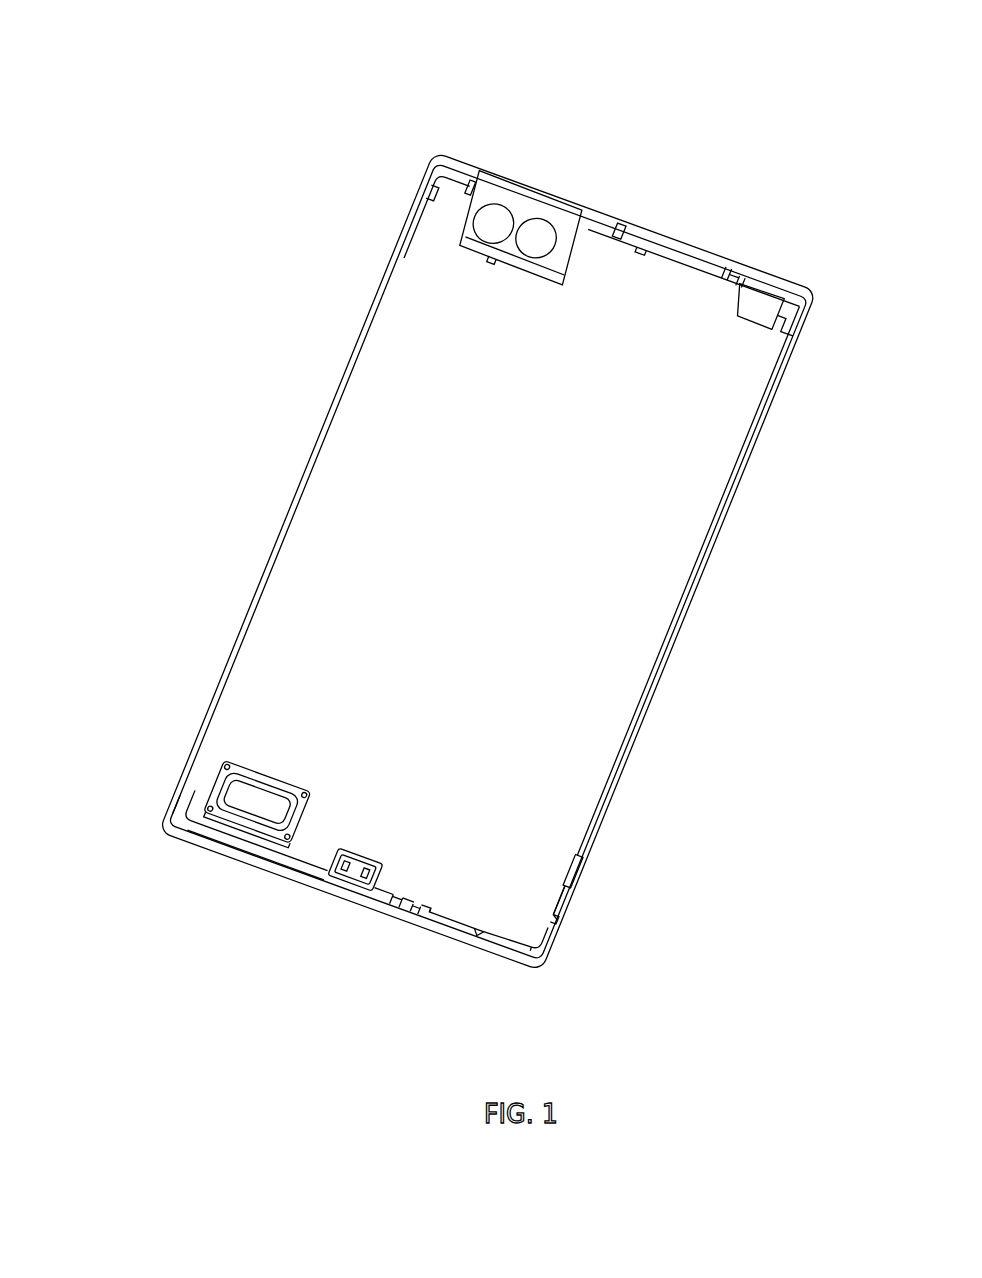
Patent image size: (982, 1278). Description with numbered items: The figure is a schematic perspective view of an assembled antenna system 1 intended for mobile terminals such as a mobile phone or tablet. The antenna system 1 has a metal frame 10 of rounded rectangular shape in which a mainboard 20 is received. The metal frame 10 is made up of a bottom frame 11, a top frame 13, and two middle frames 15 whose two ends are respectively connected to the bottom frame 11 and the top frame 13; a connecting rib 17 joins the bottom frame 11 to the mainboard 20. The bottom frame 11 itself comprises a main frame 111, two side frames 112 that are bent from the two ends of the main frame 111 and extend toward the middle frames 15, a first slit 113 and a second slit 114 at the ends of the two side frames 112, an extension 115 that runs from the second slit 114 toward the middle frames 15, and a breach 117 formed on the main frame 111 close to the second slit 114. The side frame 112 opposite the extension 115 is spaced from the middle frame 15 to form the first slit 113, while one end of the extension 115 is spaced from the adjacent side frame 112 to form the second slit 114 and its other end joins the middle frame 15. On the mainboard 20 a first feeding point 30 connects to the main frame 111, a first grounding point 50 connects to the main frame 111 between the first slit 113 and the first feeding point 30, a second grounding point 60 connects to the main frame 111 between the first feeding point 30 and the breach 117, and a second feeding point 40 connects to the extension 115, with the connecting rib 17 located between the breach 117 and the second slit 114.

The antenna system 1 is at (525, 50).
The metal frame 10 is at (284, 486).
The bottom frame 11 is at (487, 968).
The top frame 13 is at (668, 234).
The middle frames 15 is at (674, 656).
The connecting rib 17 is at (483, 930).
The mainboard 20 is at (542, 780).
The first feeding point 30 is at (395, 905).
The second feeding point 40 is at (580, 857).
The first grounding point 50 is at (320, 878).
The second grounding point 60 is at (410, 910).
The main frame 111 is at (243, 855).
The side frames 112 is at (555, 950).
The first slit 113 is at (174, 801).
The second slit 114 is at (555, 926).
The extension 115 is at (578, 887).
The breach 117 is at (432, 912).